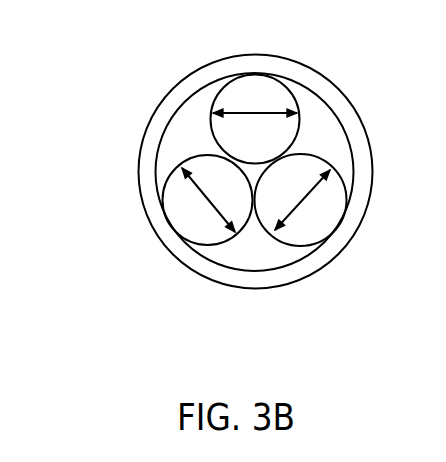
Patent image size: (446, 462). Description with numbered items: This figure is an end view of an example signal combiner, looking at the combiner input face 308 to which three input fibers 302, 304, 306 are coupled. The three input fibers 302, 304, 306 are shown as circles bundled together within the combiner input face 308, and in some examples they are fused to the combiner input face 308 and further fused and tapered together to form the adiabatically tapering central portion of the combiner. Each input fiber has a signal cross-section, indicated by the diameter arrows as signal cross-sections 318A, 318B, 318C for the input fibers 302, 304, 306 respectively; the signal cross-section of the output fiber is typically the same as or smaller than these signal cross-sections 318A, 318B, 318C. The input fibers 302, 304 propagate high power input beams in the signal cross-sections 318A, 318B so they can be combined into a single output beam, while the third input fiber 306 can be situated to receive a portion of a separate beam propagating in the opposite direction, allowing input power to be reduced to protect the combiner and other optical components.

The input fiber 302 is at (192, 215).
The input fiber 304 is at (315, 223).
The input fiber 306 is at (258, 85).
The combiner input face 308 is at (318, 132).
The signal cross-section 318A is at (198, 195).
The signal cross-section 318B is at (295, 199).
The signal cross-section 318C is at (242, 112).